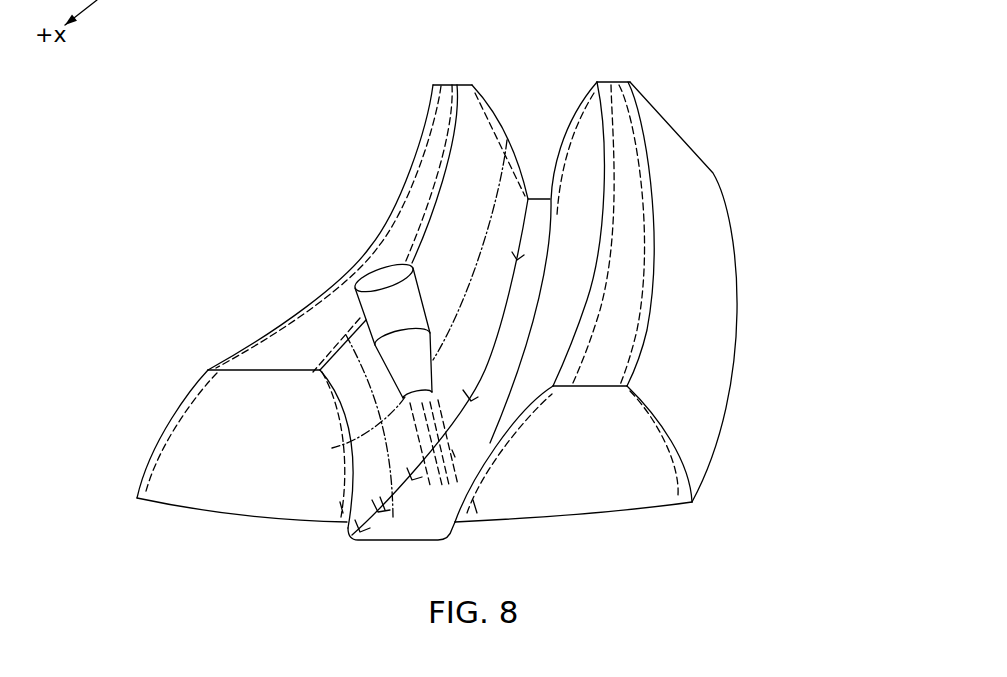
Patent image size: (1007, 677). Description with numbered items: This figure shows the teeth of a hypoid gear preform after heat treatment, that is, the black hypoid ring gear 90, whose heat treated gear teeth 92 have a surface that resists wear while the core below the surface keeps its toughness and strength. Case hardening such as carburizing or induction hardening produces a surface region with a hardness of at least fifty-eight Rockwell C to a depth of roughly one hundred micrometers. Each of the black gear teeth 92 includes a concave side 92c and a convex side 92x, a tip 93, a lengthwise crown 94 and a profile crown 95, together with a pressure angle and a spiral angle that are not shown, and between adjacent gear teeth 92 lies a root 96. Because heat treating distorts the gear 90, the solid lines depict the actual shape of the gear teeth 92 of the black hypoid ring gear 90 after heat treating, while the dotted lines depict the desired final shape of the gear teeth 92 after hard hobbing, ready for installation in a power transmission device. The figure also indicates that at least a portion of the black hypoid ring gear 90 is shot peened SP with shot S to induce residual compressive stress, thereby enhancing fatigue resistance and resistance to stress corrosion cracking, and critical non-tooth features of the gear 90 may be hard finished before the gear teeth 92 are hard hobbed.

The black hypoid ring gear 90 is at (788, 97).
The black hypoid gear teeth 92 is at (487, 82).
The convex side 92x is at (472, 128).
The concave side 92c is at (173, 417).
The tip 93 is at (418, 187).
The lengthwise crown 94 is at (480, 258).
The profile crown 95 is at (392, 460).
The root 96 is at (385, 543).
The shot peening SP is at (390, 310).
The shot S is at (450, 450).